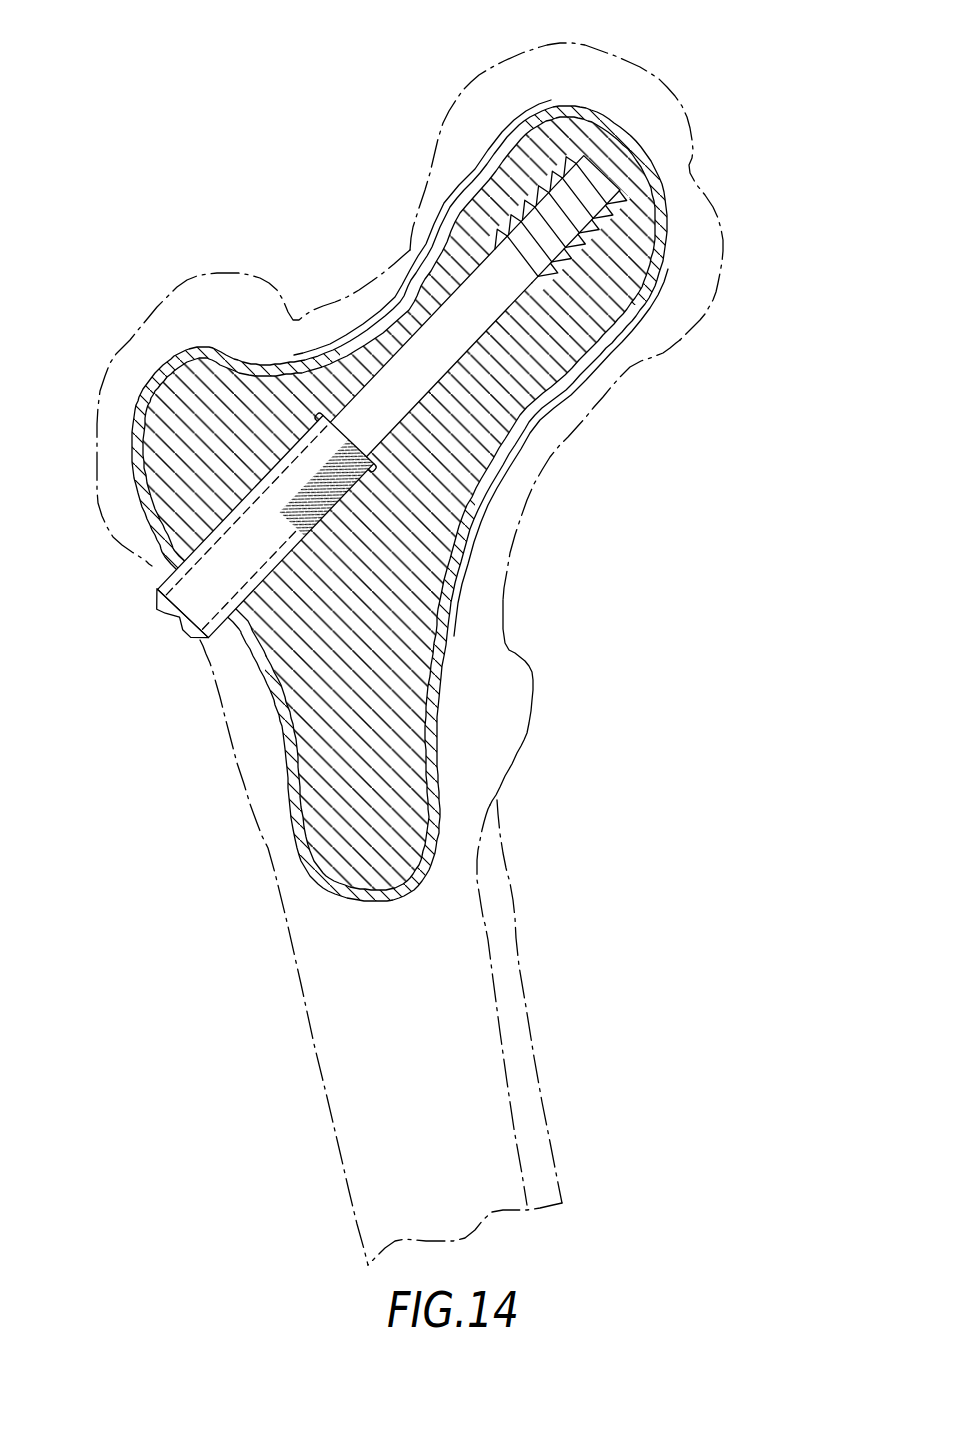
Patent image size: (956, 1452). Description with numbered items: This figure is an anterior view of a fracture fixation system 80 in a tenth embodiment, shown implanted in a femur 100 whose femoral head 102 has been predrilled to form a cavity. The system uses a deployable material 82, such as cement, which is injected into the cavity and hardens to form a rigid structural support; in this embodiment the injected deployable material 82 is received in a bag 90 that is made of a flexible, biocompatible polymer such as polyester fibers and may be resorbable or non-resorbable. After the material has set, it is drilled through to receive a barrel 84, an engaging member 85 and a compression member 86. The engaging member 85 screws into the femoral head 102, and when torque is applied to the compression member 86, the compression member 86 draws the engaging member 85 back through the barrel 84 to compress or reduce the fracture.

The fracture fixation system 80 is at (399, 450).
The deployable material 82 is at (408, 268).
The barrel 84 is at (350, 488).
The engaging member 85 is at (613, 222).
The compression member 86 is at (180, 617).
The bag 90 is at (575, 395).
The femur 100 is at (266, 870).
The femoral head 102 is at (645, 70).